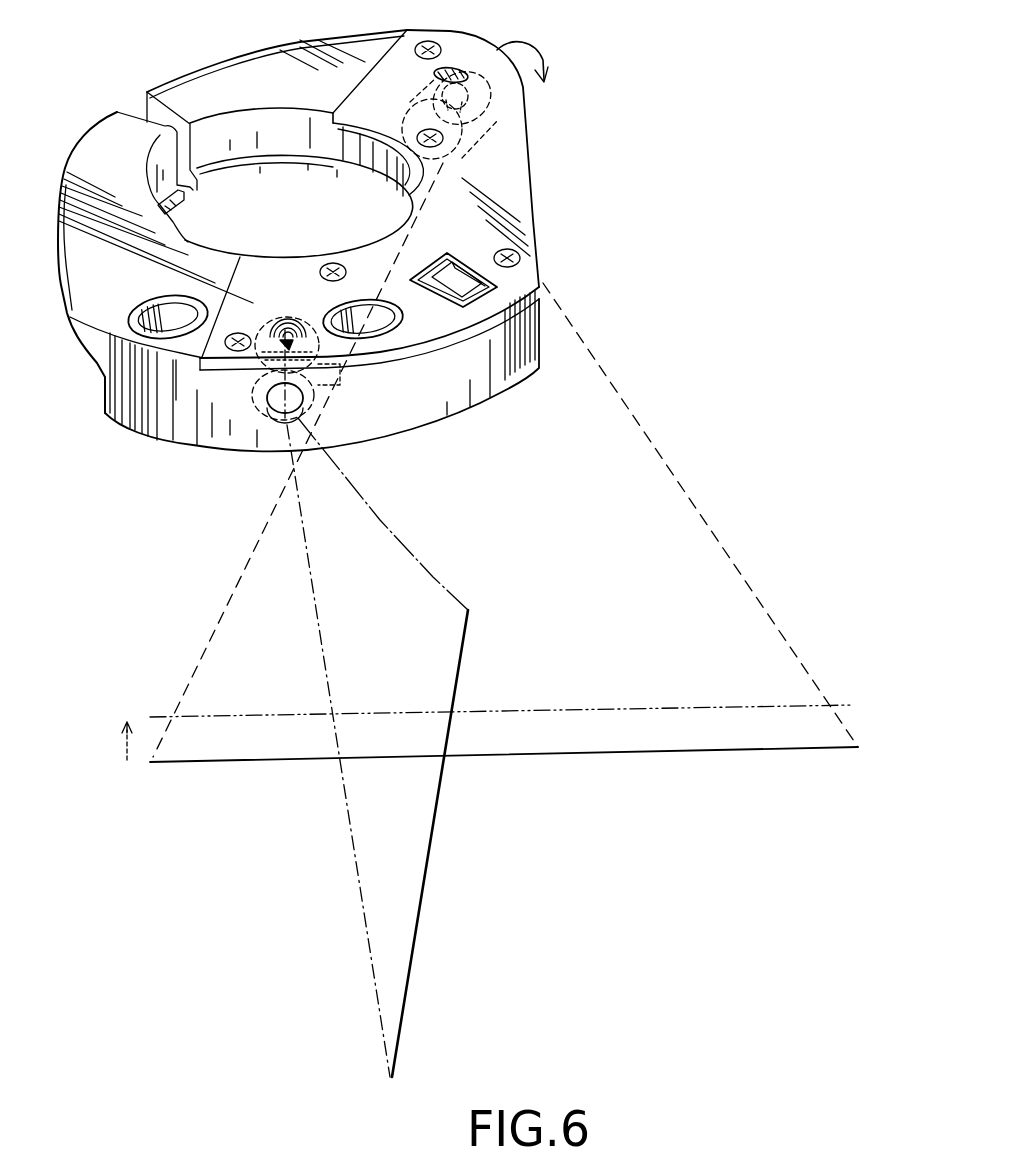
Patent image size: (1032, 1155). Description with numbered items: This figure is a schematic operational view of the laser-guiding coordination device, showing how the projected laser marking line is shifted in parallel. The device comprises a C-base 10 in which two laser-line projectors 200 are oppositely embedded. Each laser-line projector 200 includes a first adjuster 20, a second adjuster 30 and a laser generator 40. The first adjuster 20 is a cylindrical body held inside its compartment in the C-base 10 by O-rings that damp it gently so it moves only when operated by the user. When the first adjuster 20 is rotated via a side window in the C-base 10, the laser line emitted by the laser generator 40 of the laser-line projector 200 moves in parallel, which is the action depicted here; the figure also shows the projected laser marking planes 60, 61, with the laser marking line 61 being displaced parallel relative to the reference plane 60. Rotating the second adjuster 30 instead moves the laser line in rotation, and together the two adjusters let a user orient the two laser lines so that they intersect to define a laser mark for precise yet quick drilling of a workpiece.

The C-base 10 is at (530, 336).
The first adjuster 20 is at (300, 404).
The second adjuster 30 is at (330, 358).
The laser generator 40 is at (469, 157).
The horizontal laser plane 60 is at (643, 707).
The vertical laser plane 61 is at (437, 818).
The laser-line projector 200 is at (328, 382).